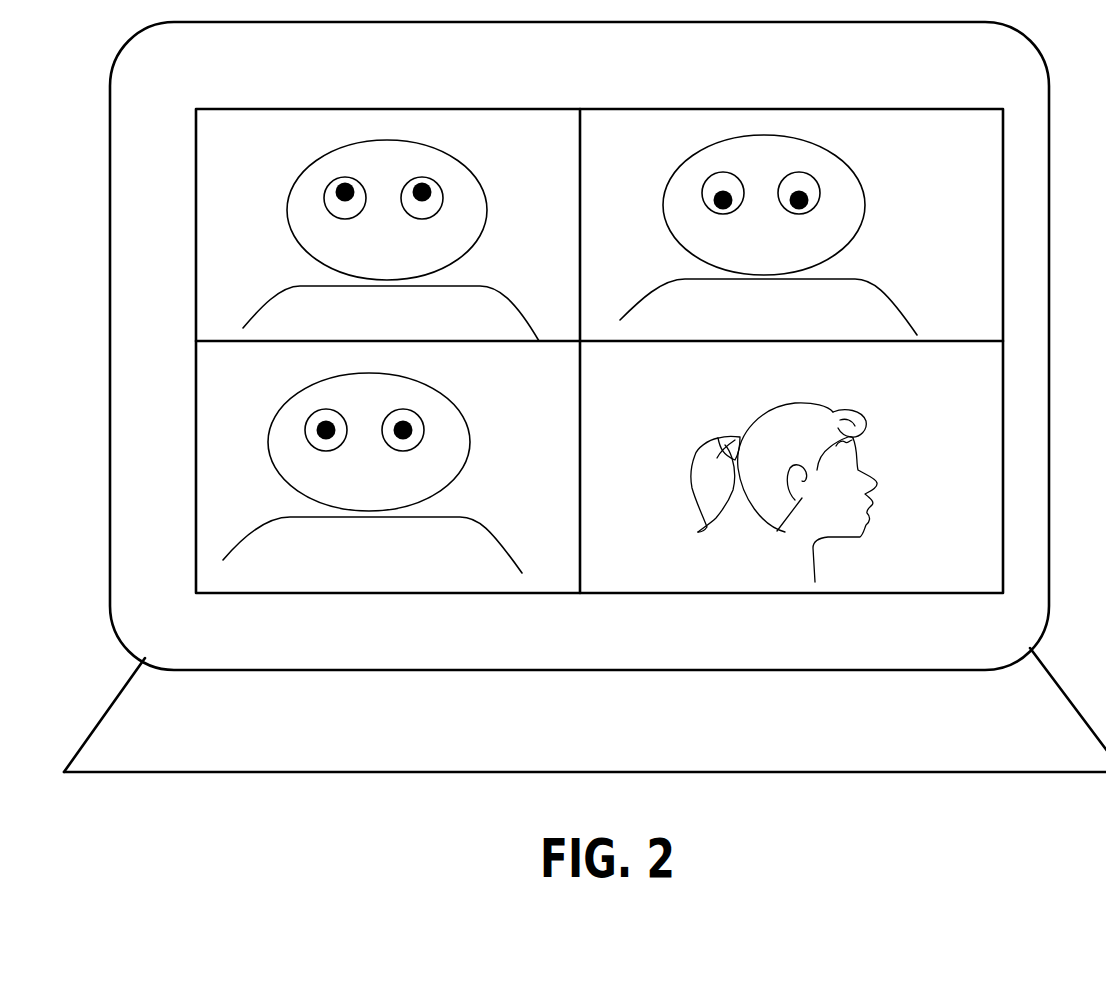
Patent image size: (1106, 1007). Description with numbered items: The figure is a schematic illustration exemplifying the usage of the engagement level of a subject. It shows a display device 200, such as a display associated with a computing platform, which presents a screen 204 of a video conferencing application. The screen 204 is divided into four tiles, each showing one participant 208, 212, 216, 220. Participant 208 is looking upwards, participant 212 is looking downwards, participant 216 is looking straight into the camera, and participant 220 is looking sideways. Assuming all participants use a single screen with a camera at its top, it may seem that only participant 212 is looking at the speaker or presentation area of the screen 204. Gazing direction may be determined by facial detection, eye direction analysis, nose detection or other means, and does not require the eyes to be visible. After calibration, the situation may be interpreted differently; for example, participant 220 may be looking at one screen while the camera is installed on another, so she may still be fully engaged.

The display device 200 is at (1066, 63).
The screen 204 is at (870, 108).
The participant 208 is at (535, 298).
The participant 212 is at (903, 291).
The participant 216 is at (513, 527).
The participant 220 is at (845, 412).